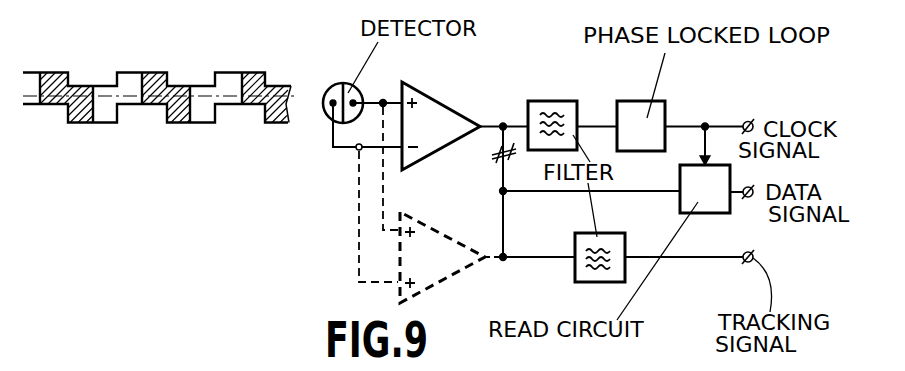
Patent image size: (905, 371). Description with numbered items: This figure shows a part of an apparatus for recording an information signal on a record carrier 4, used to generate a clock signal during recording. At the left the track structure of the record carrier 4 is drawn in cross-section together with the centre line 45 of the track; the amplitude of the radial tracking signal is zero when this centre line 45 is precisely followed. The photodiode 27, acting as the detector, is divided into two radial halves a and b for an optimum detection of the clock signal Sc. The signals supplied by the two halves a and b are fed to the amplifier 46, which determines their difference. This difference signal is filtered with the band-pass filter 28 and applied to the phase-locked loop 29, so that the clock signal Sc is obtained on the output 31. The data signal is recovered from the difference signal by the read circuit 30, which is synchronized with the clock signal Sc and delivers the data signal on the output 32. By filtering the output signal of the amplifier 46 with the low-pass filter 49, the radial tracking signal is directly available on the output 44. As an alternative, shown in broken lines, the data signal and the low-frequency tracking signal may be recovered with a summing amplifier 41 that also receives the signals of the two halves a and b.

The disc 4 is at (110, 126).
The centre line 45 is at (293, 98).
The photodiode 27 is at (338, 83).
The radial half a is at (324, 97).
The radial half b is at (361, 88).
The amplifier 46 is at (440, 92).
The summing amplifier 41 is at (443, 232).
The band-pass filter 28 is at (540, 101).
The phase-locked loop 29 is at (632, 101).
The read circuit 30 is at (680, 200).
The output 31 is at (747, 121).
The data signal output 32 is at (755, 200).
The output 44 is at (747, 263).
The low-pass filter 49 is at (598, 282).